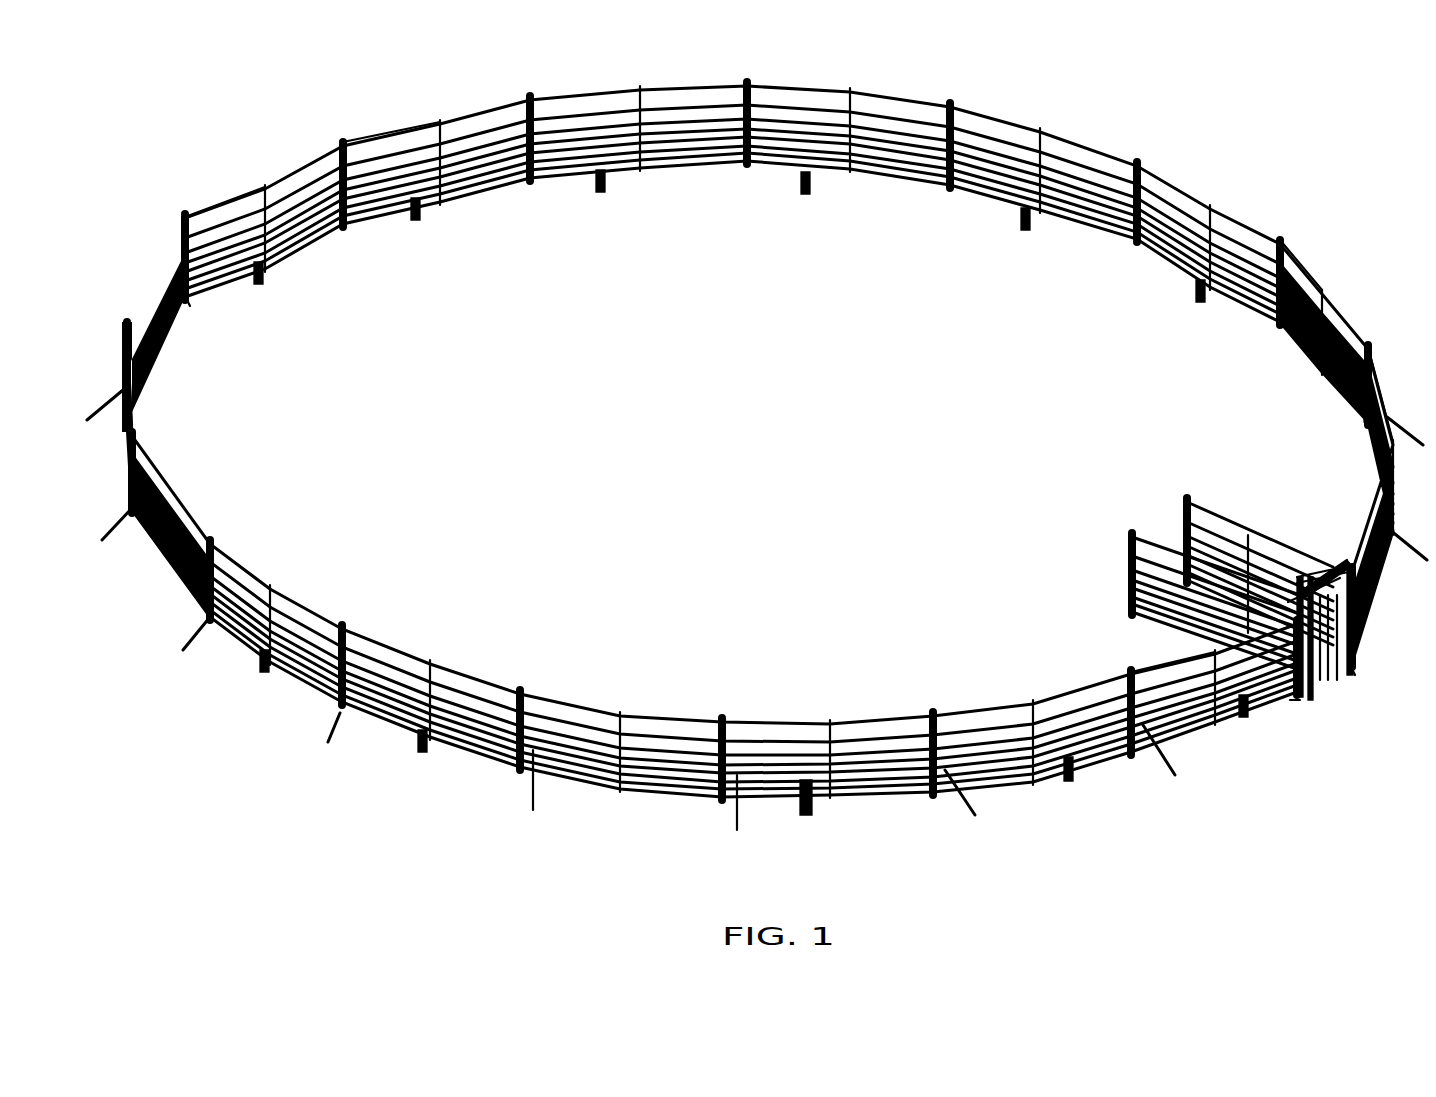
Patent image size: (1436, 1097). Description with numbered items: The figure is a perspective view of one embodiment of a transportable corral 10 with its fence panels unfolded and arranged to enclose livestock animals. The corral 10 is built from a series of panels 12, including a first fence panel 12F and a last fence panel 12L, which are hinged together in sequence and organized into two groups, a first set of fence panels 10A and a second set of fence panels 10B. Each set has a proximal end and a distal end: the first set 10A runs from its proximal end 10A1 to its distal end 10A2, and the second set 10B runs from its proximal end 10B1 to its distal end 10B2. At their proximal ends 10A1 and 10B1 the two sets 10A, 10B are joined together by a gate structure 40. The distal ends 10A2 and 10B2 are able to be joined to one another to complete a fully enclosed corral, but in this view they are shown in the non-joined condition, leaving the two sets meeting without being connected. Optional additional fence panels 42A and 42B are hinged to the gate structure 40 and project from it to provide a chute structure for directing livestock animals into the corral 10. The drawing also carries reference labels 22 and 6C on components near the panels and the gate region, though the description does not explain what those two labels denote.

The transportable corral 10 is at (757, 468).
The first set of fence panels 10A is at (696, 490).
The second set of fence panels 10B is at (806, 410).
The first proximal end of first set of fence panels 10A1 is at (1290, 705).
The second distal end of first set of fence panels 10A2 is at (185, 205).
The first proximal end of second set of fence panels 10B1 is at (1372, 650).
The second distal end of second set of fence panels 10B2 is at (195, 312).
The fence panel 12 is at (1320, 290).
The last fence panel 12L is at (325, 150).
The first fence panel 12F is at (1355, 505).
The foot bracket 22 is at (815, 800).
The gate structure 40 is at (735, 822).
The additional fence panel 42A is at (1130, 550).
The additional fence panel 42B is at (1186, 510).
The gate latch assembly 6C is at (1330, 560).